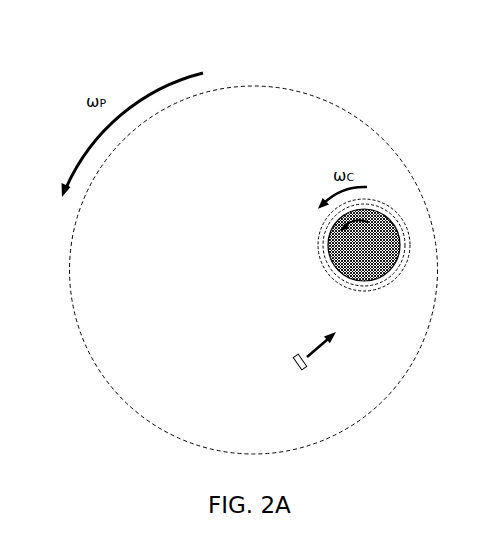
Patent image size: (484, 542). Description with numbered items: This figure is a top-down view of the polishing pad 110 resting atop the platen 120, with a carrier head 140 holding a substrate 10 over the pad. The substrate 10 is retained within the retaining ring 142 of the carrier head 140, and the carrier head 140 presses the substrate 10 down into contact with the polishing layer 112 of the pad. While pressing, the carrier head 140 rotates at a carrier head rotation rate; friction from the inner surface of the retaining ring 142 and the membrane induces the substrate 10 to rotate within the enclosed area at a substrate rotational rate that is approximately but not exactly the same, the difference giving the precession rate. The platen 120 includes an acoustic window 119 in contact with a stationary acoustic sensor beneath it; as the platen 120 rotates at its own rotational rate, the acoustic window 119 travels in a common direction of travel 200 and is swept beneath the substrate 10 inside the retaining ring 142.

The polishing pad 110 is at (254, 238).
The platen 120 is at (271, 87).
The polishing layer 112 is at (327, 127).
The carrier head 140 is at (303, 244).
The retaining ring 142 is at (325, 263).
The substrate 10 is at (388, 258).
The acoustic window 119 is at (292, 358).
The direction of travel 200 is at (309, 361).